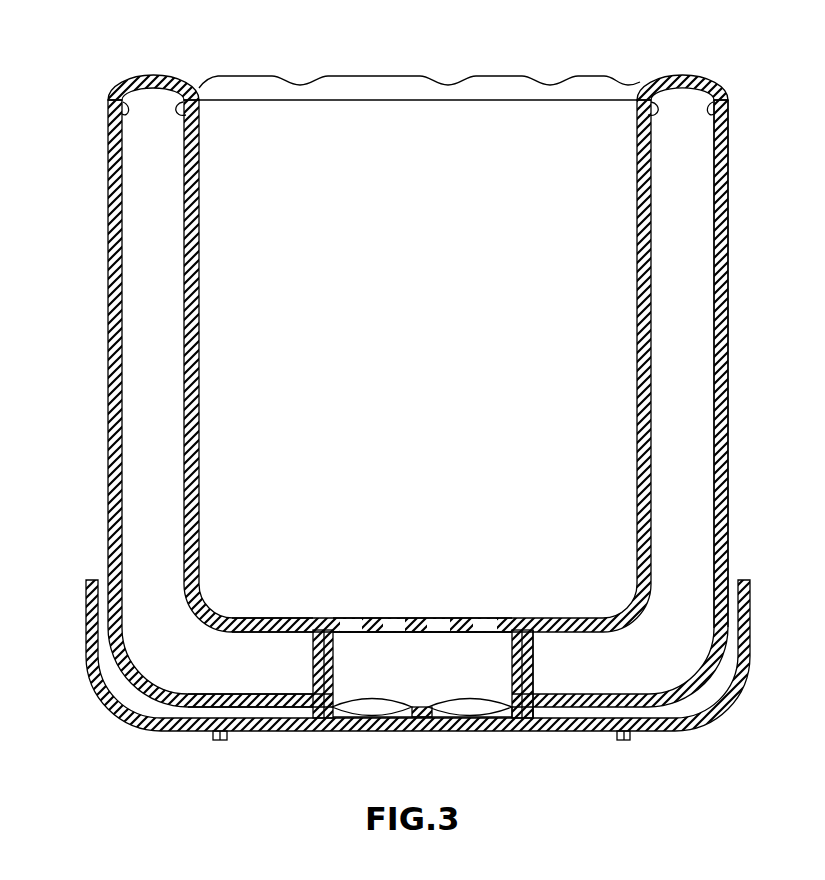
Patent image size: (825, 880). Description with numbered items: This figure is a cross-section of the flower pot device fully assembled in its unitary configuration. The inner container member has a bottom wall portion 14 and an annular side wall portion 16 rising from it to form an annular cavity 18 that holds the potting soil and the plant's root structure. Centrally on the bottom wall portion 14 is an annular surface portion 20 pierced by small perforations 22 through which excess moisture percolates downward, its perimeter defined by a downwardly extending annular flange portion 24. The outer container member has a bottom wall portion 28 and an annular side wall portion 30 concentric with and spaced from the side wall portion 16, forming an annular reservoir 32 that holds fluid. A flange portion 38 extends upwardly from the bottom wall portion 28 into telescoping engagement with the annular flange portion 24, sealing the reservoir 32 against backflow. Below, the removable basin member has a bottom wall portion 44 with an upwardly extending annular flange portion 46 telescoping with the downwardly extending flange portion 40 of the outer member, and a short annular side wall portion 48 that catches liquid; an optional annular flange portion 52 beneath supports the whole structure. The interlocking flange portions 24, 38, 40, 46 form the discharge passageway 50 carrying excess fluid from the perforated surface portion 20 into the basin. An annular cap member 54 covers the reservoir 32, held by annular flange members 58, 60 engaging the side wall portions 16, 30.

The bottom wall portion 14 is at (296, 622).
The annular side wall portion 16 is at (637, 225).
The annular cavity 18 is at (490, 130).
The annular surface portion 20 is at (332, 630).
The perforations 22 is at (490, 628).
The annular flange portion 24 is at (534, 640).
The bottom wall portion 28 is at (192, 700).
The annular side wall portion 30 is at (722, 215).
The annular reservoir 32 is at (156, 332).
The flange portion 38 is at (534, 668).
The flange portion 40 is at (512, 718).
The bottom wall portion 44 is at (365, 720).
The annular flange portion 46 is at (526, 718).
The annular side wall portion 48 is at (738, 674).
The discharge passageway 50 is at (415, 672).
The annular flange portion 52 is at (216, 738).
The annular cap member 54 is at (675, 74).
The annular flange member 58 is at (108, 122).
The annular flange member 60 is at (192, 118).